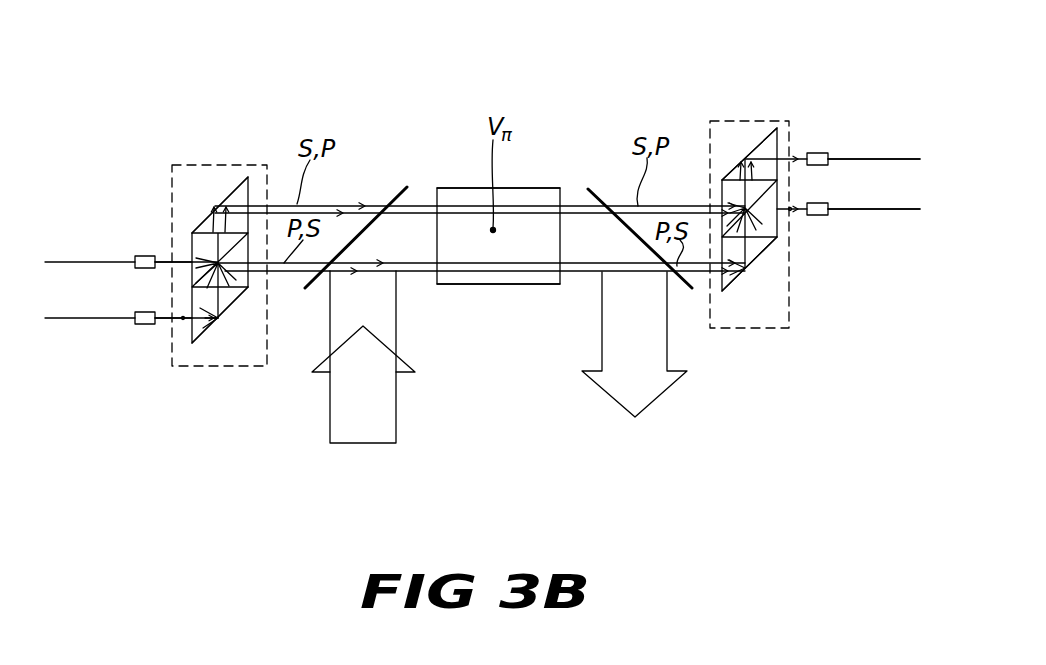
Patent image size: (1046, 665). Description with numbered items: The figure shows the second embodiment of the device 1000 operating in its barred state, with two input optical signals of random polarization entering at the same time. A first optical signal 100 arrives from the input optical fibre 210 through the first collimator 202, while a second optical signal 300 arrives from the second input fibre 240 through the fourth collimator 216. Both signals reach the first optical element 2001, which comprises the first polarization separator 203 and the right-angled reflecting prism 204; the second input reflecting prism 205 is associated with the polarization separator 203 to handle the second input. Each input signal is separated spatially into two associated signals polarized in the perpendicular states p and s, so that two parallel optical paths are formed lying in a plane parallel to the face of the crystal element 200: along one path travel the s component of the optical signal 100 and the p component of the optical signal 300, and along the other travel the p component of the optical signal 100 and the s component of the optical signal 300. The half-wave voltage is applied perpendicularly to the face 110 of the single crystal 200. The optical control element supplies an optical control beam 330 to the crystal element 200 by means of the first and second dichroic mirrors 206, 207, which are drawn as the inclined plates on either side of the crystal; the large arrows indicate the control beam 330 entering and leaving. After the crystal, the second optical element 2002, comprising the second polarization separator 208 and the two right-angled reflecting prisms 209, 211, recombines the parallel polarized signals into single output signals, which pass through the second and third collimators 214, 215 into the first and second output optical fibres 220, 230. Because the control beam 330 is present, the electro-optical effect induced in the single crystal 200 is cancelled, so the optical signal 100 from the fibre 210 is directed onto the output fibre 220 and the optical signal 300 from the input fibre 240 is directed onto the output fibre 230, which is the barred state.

The device 1000 is at (127, 99).
The optical signal 100 is at (163, 261).
The face 110 is at (437, 193).
The crystal element 200 is at (495, 300).
The first collimator 202 is at (143, 269).
The first polarization separator 203 is at (202, 238).
The right-angled reflecting prism 204 is at (236, 188).
The second input reflecting prism 205 is at (225, 298).
The first dichroic mirror 206 is at (312, 289).
The second dichroic mirror 207 is at (677, 282).
The second polarization separator 208 is at (730, 158).
The right-angled reflecting prism 209 is at (755, 248).
The input optical fibre 210 is at (95, 262).
The right-angled reflecting prism 211 is at (768, 148).
The second collimator 214 is at (820, 217).
The third collimator 215 is at (817, 153).
The fourth collimator 216 is at (142, 325).
The first output optical fibre 220 is at (850, 159).
The second output optical fibre 230 is at (892, 212).
The second input fibre 240 is at (73, 320).
The optical signal 300 is at (183, 321).
The optical control beam 330 is at (385, 417).
The first optical element 2001 is at (216, 349).
The second optical element 2002 is at (751, 313).